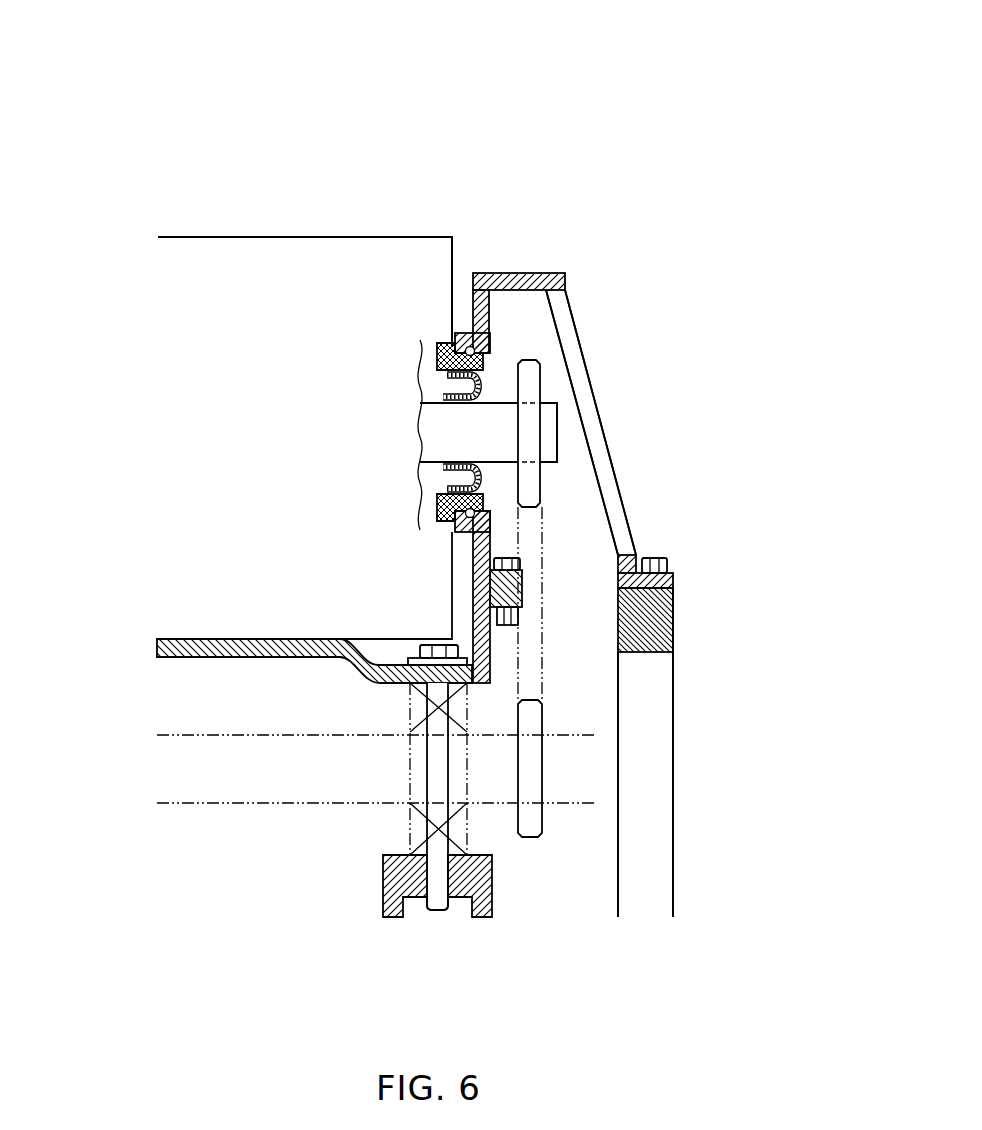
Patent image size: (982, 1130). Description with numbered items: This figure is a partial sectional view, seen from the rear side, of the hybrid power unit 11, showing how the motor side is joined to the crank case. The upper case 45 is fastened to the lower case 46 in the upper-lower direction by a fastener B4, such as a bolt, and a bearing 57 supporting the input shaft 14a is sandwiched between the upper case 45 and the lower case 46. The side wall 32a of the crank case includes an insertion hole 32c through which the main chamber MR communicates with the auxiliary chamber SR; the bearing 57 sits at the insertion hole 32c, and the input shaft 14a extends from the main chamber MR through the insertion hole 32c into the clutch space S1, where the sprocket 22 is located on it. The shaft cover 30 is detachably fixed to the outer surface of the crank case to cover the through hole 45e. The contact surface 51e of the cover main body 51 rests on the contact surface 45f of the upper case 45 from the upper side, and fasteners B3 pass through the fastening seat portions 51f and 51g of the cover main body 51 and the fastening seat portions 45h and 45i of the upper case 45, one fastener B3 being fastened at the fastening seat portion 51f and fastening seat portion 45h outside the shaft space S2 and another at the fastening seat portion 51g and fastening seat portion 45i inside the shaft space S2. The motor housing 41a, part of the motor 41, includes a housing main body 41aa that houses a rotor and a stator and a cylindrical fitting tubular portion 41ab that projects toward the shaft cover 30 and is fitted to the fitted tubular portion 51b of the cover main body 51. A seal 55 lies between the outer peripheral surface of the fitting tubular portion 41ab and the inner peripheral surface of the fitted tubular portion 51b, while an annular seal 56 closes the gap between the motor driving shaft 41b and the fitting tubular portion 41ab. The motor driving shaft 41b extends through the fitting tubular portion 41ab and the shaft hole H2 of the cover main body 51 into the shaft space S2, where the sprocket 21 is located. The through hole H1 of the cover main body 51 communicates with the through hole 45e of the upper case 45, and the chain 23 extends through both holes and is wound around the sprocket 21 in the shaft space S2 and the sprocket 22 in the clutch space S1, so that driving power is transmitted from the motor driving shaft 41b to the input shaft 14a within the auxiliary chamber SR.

The hybrid power unit 11 is at (138, 102).
The housing 41 is at (243, 237).
The motor housing 41a is at (183, 237).
The housing main body 41aa is at (310, 237).
The fitting tubular portion 41ab is at (450, 495).
The motor driving shaft 41b is at (557, 435).
The cover main body 51 is at (518, 272).
The fitted tubular portion 51b is at (456, 334).
The contact surface 51e is at (675, 580).
The fastening seat portion 51f is at (675, 572).
The fastening seat portion 51g is at (520, 582).
The seal 55 is at (442, 357).
The annular seal 56 is at (458, 395).
The bearing 57 is at (412, 825).
The shaft cover 30 is at (566, 268).
The sprocket 21 is at (532, 350).
The sprocket 22 is at (530, 840).
The chain 23 is at (545, 672).
The upper case 45 is at (175, 660).
The through hole 45e is at (673, 653).
The contact surface 45f is at (675, 610).
The fastening seat portion 45h is at (675, 625).
The fastening seat portion 45i is at (520, 600).
The lower case 46 is at (405, 905).
The side wall 32a is at (383, 860).
The insertion hole 32c is at (490, 850).
The input shaft 14a is at (222, 803).
The fastener B3 is at (655, 558).
The fastener B4 is at (435, 645).
The through hole H1 is at (595, 550).
The shaft hole H2 is at (488, 272).
The clutch space S1 is at (600, 770).
The shaft space S2 is at (557, 372).
The main chamber MR is at (250, 860).
The auxiliary chamber SR is at (585, 865).